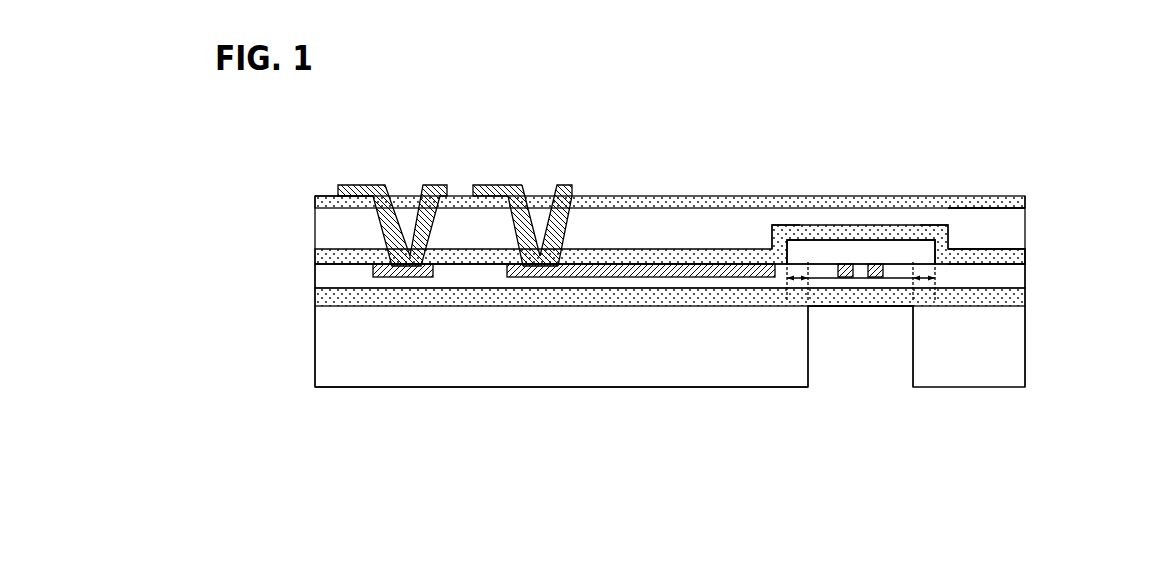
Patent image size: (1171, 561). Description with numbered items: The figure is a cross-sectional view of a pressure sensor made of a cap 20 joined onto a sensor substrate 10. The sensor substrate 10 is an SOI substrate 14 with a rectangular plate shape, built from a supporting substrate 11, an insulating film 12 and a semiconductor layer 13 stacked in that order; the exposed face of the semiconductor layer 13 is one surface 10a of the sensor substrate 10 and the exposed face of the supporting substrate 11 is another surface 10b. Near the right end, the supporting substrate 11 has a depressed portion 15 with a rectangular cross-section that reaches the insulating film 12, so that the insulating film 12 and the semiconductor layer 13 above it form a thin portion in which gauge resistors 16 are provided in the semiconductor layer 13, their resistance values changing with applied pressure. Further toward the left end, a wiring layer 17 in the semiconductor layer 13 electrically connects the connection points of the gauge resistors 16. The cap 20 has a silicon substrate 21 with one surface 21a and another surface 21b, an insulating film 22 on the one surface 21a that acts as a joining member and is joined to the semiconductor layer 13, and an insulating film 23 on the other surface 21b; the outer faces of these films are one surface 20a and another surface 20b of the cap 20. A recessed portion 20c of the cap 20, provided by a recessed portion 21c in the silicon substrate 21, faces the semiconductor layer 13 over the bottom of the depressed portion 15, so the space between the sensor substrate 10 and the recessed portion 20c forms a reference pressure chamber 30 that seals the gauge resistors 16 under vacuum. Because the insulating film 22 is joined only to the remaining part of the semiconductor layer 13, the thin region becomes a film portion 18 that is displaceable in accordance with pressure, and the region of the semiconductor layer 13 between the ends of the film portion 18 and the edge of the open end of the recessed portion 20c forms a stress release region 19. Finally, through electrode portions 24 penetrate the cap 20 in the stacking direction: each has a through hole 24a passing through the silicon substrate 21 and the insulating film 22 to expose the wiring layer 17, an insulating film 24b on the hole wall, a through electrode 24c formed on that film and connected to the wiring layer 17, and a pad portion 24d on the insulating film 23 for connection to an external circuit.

The sensor substrate 10 is at (679, 360).
The one surface of the sensor substrate 10a is at (340, 267).
The other surface of the sensor substrate 10b is at (322, 387).
The supporting substrate 11 is at (1015, 333).
The insulating film 12 is at (1015, 298).
The semiconductor layer 13 is at (1015, 283).
The SOI substrate 14 is at (722, 325).
The depressed portion 15 is at (913, 365).
The gauge resistors 16 is at (847, 265).
The wiring layer 17 is at (652, 266).
The film portion 18 is at (860, 346).
The stress release region 19 is at (803, 279).
The cap 20 is at (627, 268).
The one surface of the cap 20a is at (325, 251).
The other surface of the cap 20b is at (315, 199).
The recessed portion 20c is at (790, 245).
The silicon substrate 21 is at (1011, 268).
The one surface of the silicon substrate 21a is at (1013, 248).
The other surface of the silicon substrate 21b is at (1015, 204).
The recessed portion of the silicon substrate 21c is at (937, 246).
The insulating film 22 is at (1018, 260).
The insulating film 23 is at (1012, 196).
The through electrode portions 24 is at (469, 179).
The through hole 24a is at (568, 204).
The insulating film 24b is at (543, 218).
The through electrode 24c is at (530, 212).
The pad portion 24d is at (487, 185).
The reference pressure chamber 30 is at (877, 250).